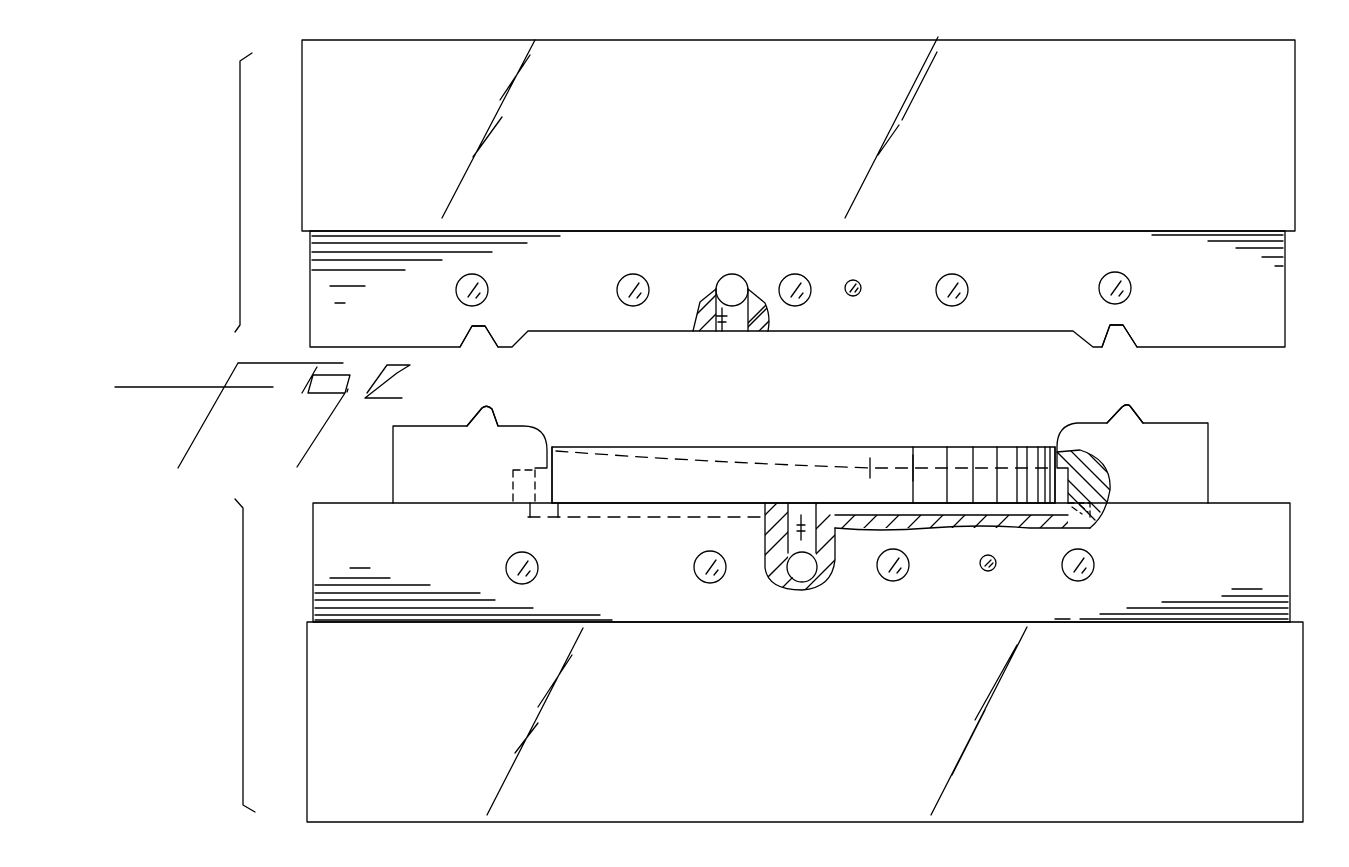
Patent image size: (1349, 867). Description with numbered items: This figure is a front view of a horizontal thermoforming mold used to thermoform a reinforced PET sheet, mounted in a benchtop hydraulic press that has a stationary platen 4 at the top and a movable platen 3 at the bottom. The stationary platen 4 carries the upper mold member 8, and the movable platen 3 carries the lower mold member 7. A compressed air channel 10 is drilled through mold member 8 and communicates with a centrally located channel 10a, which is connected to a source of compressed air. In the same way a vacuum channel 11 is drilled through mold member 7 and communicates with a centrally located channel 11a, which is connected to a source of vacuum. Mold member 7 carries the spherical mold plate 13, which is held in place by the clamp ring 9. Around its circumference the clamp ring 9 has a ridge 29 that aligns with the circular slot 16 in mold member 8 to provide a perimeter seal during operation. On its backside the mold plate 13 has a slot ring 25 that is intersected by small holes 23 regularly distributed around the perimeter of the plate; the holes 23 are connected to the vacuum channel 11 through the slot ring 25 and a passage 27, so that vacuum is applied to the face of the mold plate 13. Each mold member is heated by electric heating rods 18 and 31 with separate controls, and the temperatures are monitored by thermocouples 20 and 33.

The movable platen 3 is at (1275, 768).
The stationary platen 4 is at (1270, 77).
The mold member 7 is at (1268, 582).
The mold member 8 is at (1268, 300).
The clamp ring 9 is at (468, 468).
The channel 10 is at (727, 282).
The channel 10a is at (702, 316).
The channel 11 is at (812, 575).
The channel 11a is at (772, 538).
The spherical mold plate 13 is at (812, 496).
The circular slot 16 is at (477, 338).
The heating rods 18 is at (615, 283).
The thermocouple 20 is at (859, 282).
The small holes 23 is at (555, 445).
The slot ring 25 is at (1082, 509).
The passage 27 is at (943, 507).
The ridge 29 is at (490, 408).
The heating rods 31 is at (695, 560).
The thermocouple 33 is at (994, 569).